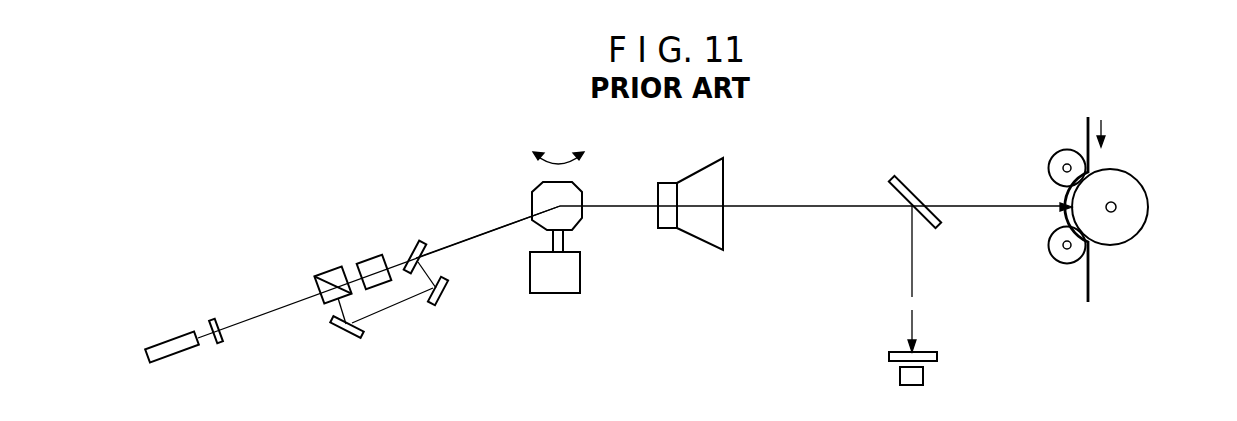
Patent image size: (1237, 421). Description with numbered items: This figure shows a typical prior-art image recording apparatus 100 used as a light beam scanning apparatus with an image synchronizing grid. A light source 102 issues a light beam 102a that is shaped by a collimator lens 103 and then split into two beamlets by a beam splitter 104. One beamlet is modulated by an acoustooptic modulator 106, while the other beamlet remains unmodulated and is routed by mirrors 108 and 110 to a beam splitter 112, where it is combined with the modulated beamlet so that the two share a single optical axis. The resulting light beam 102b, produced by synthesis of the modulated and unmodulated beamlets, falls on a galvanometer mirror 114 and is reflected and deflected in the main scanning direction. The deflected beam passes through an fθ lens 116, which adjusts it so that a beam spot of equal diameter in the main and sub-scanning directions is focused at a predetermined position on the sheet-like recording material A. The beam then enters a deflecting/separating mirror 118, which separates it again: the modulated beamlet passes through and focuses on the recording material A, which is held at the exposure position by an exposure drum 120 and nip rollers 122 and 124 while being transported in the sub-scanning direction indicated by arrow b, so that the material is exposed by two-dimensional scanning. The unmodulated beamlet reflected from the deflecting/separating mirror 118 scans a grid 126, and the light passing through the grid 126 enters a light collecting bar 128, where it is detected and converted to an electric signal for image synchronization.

The image recording apparatus 100 is at (692, 258).
The light source 102 is at (177, 352).
The light beam 102a is at (262, 310).
The light beam 102b is at (485, 225).
The collimator lens 103 is at (222, 340).
The beam splitter 104 is at (333, 270).
The acoustooptic modulator 106 is at (375, 258).
The mirror 108 is at (347, 338).
The mirror 110 is at (440, 296).
The beam splitter 112 is at (408, 240).
The galvanometer mirror 114 is at (575, 190).
The fθ lens 116 is at (720, 178).
The deflecting/separating mirror 118 is at (905, 190).
The exposure drum 120 is at (1126, 178).
The nip roller 122 is at (1060, 150).
The nip roller 124 is at (1055, 255).
The grid 126 is at (937, 358).
The light collecting bar 128 is at (925, 378).
The recording material A is at (1090, 270).
The arrow b is at (1111, 131).